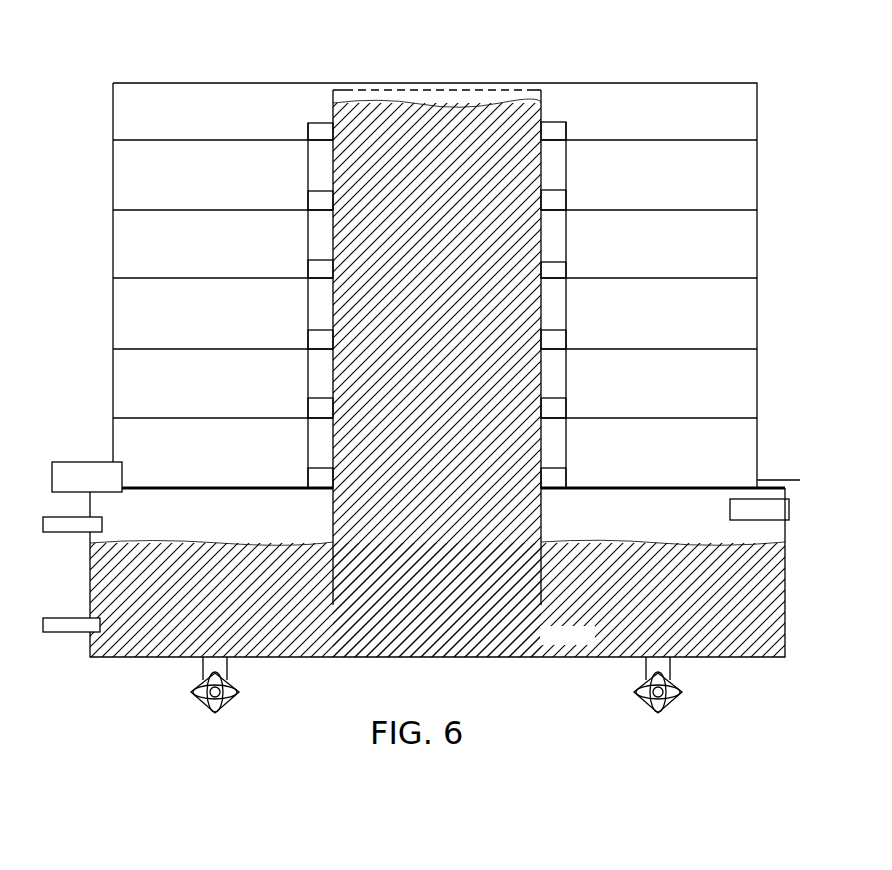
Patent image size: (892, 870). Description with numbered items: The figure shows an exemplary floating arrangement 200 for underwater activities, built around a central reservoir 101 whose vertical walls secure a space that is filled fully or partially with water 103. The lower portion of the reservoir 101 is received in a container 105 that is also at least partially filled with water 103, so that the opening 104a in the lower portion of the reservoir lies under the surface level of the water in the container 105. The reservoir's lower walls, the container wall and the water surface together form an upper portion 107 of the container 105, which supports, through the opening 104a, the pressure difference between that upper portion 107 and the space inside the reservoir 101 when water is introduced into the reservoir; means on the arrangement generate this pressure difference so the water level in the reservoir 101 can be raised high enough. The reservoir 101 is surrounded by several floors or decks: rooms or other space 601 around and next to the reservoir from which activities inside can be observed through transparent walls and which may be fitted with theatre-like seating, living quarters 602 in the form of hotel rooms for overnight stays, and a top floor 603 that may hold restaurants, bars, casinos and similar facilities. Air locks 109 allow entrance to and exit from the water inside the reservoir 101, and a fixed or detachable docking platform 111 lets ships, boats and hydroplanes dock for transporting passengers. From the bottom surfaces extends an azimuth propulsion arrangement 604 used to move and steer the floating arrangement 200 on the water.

The floating arrangement 200 is at (321, 33).
The reservoir 101 is at (543, 103).
The water 103 is at (434, 105).
The opening 104a is at (516, 609).
The container 105 is at (748, 659).
The upper portion of the container 107 is at (710, 502).
The air locks 109 is at (305, 131).
The docking platform 111 is at (20, 478).
The rooms or other space 601 is at (435, 406).
The living quarters 602 is at (435, 224).
The top floor 603 is at (435, 120).
The azimuth propulsion arrangement 604 is at (190, 694).